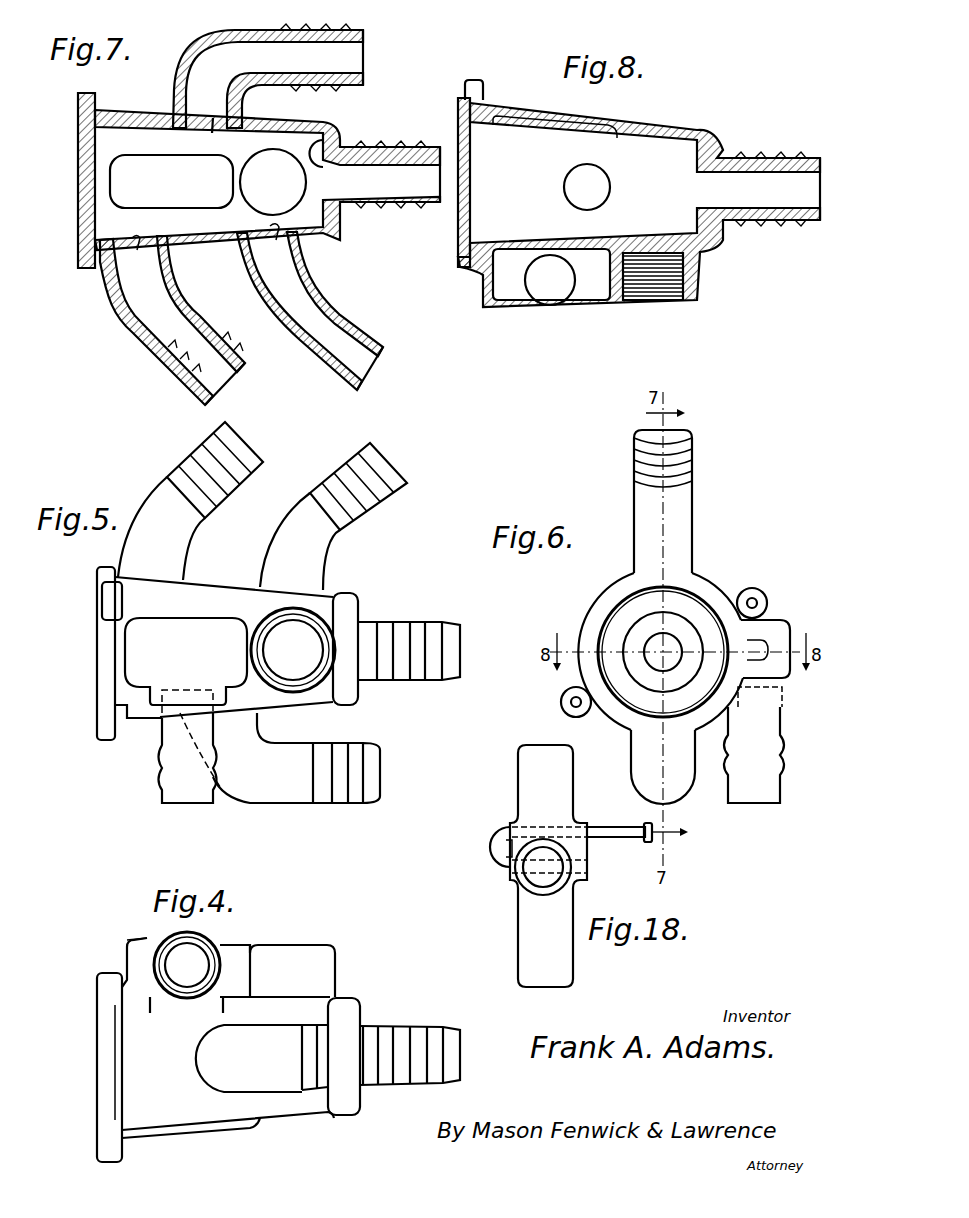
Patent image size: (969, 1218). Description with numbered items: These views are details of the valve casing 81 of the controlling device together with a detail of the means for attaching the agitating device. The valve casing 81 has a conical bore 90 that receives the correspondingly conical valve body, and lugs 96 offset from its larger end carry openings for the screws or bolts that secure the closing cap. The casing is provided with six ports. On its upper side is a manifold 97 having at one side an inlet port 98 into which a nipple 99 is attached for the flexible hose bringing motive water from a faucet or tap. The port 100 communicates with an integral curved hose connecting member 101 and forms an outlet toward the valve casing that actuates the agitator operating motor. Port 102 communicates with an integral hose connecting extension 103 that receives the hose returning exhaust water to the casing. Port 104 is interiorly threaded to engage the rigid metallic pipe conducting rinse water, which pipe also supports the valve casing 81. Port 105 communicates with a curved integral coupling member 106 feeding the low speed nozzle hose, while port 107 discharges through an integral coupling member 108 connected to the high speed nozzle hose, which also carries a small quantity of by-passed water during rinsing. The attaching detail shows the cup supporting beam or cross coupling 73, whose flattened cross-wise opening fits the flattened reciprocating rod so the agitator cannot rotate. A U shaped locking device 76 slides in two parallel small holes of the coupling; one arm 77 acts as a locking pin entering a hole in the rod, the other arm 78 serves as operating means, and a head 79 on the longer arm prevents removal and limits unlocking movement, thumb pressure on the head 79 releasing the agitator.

In FIG. 18, the cup supporting beam or cross coupling 73 is at (530, 935).
In FIG. 18, the U shaped locking device 76 is at (494, 847).
In FIG. 18, the locking arm 77 is at (544, 870).
In FIG. 18, the operating arm 78 is at (593, 824).
In FIG. 18, the head 79 is at (646, 842).
In FIG. 7, the valve casing 81 is at (133, 114).
In FIG. 8, the valve casing 81 is at (676, 110).
In FIG. 5, the valve casing 81 is at (224, 600).
In FIG. 6, the valve casing 81 is at (601, 597).
In FIG. 4, the valve casing 81 is at (132, 1083).
In FIG. 7, the conical bore 90 is at (135, 127).
In FIG. 8, the conical bore 90 is at (488, 243).
In FIG. 8, the lugs 96 is at (483, 90).
In FIG. 5, the lugs 96 is at (120, 598).
In FIG. 6, the lugs 96 is at (757, 592).
In FIG. 7, the manifold 97 is at (171, 181).
In FIG. 8, the manifold 97 is at (512, 308).
In FIG. 5, the manifold 97 is at (186, 661).
In FIG. 6, the manifold 97 is at (778, 620).
In FIG. 4, the manifold 97 is at (143, 938).
In FIG. 8, the inlet port 98 is at (557, 288).
In FIG. 4, the inlet port 98 is at (197, 962).
In FIG. 5, the nipple 99 is at (201, 803).
In FIG. 6, the nipple 99 is at (780, 795).
In FIG. 4, the nipple 99 is at (185, 992).
In FIG. 7, the port 100 is at (208, 137).
In FIG. 8, the port 100 is at (587, 187).
In FIG. 7, the curved hose connecting member 101 is at (244, 31).
In FIG. 5, the curved hose connecting member 101 is at (268, 800).
In FIG. 6, the curved hose connecting member 101 is at (682, 772).
In FIG. 4, the curved hose connecting member 101 is at (249, 1058).
In FIG. 7, the port 102 is at (340, 133).
In FIG. 8, the port 102 is at (713, 184).
In FIG. 6, the port 102 is at (689, 634).
In FIG. 7, the hose connecting extension 103 is at (393, 148).
In FIG. 8, the hose connecting extension 103 is at (760, 160).
In FIG. 5, the hose connecting extension 103 is at (413, 623).
In FIG. 4, the hose connecting extension 103 is at (415, 1025).
In FIG. 7, the port 104 is at (273, 182).
In FIG. 8, the port 104 is at (680, 290).
In FIG. 5, the port 104 is at (293, 650).
In FIG. 7, the port 105 is at (274, 245).
In FIG. 7, the curved integral coupling member 106 is at (333, 300).
In FIG. 5, the curved integral coupling member 106 is at (333, 516).
In FIG. 7, the port 107 is at (138, 256).
In FIG. 7, the integral coupling member 108 is at (143, 353).
In FIG. 5, the integral coupling member 108 is at (190, 501).
In FIG. 6, the integral coupling member 108 is at (687, 517).